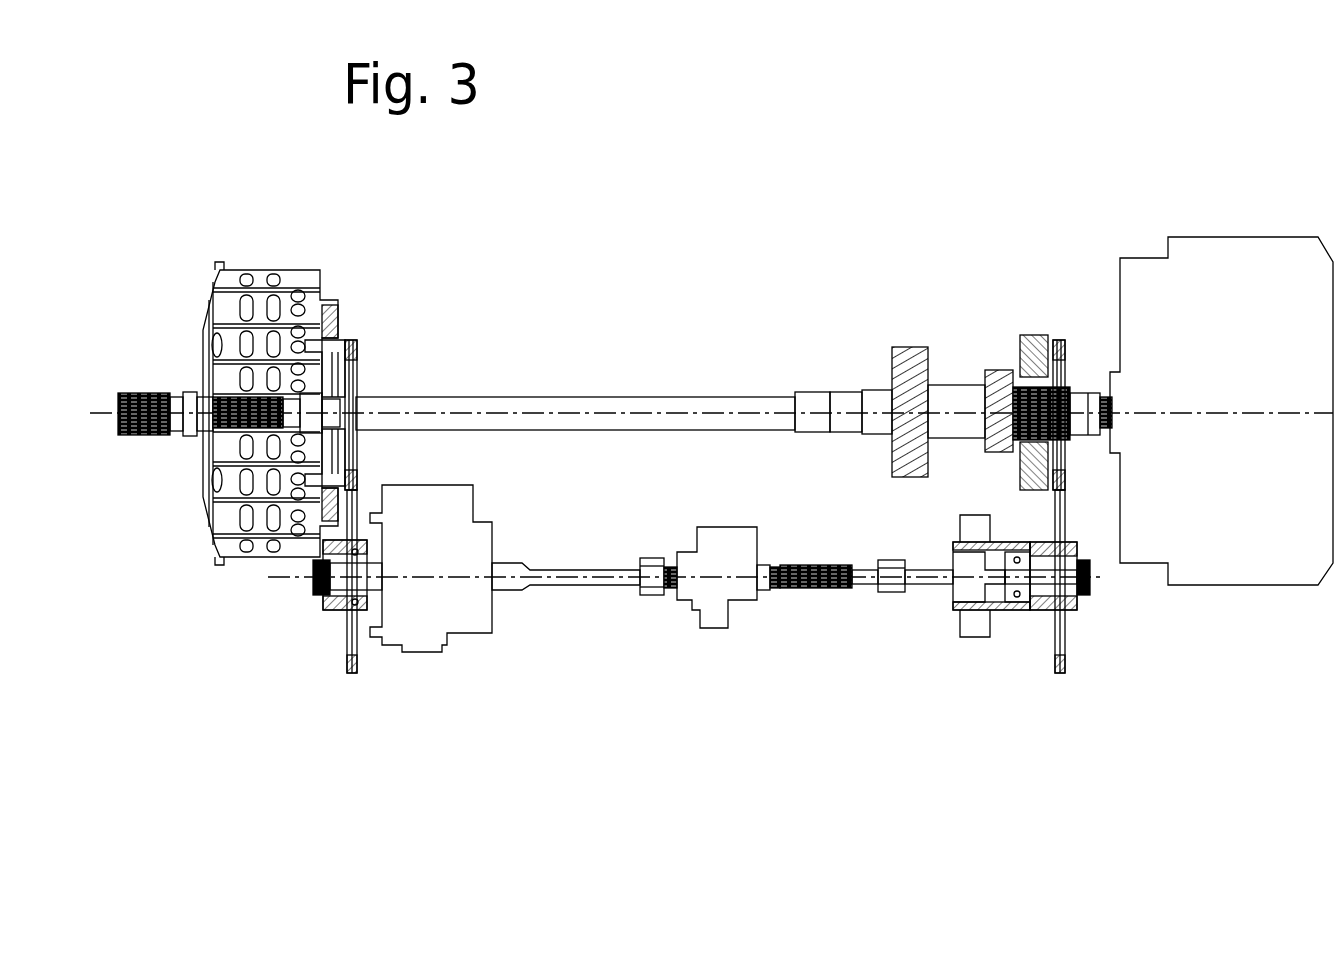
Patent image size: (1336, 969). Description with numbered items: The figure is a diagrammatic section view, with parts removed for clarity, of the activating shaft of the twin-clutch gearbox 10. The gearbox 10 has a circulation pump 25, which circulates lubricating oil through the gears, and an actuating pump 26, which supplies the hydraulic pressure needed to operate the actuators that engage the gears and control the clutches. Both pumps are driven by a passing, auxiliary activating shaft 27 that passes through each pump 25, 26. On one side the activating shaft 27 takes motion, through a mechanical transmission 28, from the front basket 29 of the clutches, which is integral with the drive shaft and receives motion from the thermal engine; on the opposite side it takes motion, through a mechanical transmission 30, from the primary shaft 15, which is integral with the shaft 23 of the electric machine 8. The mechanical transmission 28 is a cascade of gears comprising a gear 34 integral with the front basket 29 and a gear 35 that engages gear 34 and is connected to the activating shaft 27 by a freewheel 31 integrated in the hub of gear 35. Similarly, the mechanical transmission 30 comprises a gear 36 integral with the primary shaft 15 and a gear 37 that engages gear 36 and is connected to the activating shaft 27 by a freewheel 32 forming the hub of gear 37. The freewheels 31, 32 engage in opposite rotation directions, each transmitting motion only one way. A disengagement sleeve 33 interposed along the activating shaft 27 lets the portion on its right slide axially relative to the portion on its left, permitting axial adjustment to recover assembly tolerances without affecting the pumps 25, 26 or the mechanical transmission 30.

The twin-clutch gearbox 10 is at (709, 124).
The electric machine 8 is at (1221, 411).
The primary shaft 15 is at (532, 402).
The shaft of the electric machine 23 is at (1107, 393).
The circulation pump 25 is at (728, 577).
The actuating pump 26 is at (431, 568).
The activating shaft 27 is at (590, 576).
The mechanical transmission 28 is at (256, 605).
The front basket 29 is at (285, 270).
The mechanical transmission 30 is at (1134, 611).
The freewheel 31 is at (329, 608).
The freewheel 32 is at (1030, 612).
The disengagement sleeve 33 is at (822, 586).
The gear 34 is at (357, 342).
The gear 35 is at (358, 667).
The gear 36 is at (1062, 340).
The gear 37 is at (1068, 670).